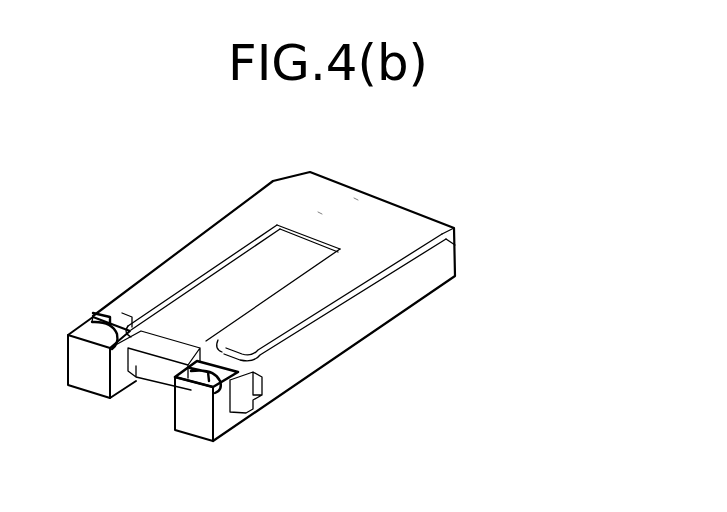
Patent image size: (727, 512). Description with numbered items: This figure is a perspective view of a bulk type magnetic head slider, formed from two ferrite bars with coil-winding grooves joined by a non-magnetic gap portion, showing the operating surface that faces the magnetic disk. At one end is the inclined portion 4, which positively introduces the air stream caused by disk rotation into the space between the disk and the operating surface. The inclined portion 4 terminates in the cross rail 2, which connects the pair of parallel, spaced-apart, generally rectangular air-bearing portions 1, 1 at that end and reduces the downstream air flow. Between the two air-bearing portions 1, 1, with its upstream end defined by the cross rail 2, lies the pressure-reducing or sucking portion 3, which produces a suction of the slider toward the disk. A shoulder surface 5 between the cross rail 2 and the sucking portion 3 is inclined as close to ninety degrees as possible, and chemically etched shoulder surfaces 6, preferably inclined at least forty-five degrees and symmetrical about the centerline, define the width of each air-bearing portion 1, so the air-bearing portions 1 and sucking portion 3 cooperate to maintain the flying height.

The air-bearing portion 1 is at (212, 247).
The cross rail 2 is at (320, 216).
The pressure-reducing or sucking portion 3 is at (200, 323).
The inclined portion 4 is at (356, 196).
The shoulder surface 5 is at (295, 228).
The shoulder surfaces 6 is at (200, 277).